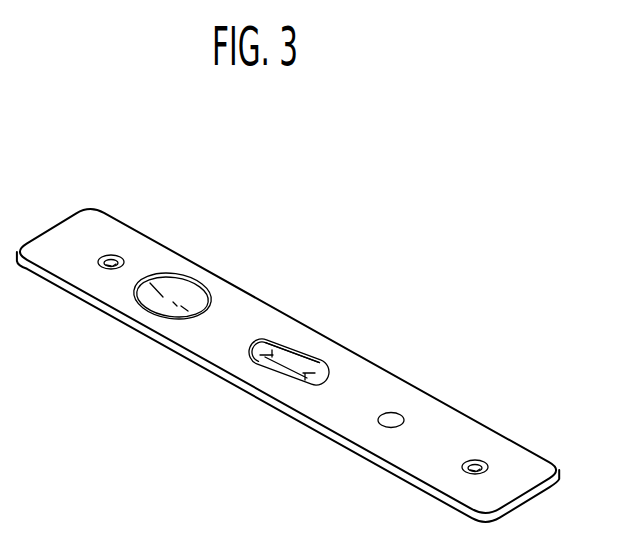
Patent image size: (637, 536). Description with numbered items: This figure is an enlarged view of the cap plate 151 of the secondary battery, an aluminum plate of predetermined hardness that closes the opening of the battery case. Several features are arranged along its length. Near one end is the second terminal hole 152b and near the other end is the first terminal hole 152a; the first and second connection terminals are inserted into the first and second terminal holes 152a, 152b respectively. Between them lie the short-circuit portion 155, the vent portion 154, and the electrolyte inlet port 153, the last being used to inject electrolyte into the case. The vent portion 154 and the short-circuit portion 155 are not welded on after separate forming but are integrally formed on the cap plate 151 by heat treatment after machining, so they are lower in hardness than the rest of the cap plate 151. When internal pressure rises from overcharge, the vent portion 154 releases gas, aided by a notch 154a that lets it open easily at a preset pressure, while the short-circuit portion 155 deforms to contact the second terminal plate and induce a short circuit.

The cap plate 151 is at (545, 472).
The first terminal hole 152a is at (475, 467).
The second terminal hole 152b is at (113, 262).
The electrolyte inlet port 153 is at (392, 418).
The vent portion 154 is at (289, 347).
The notch 154a is at (298, 351).
The short-circuit portion 155 is at (192, 288).